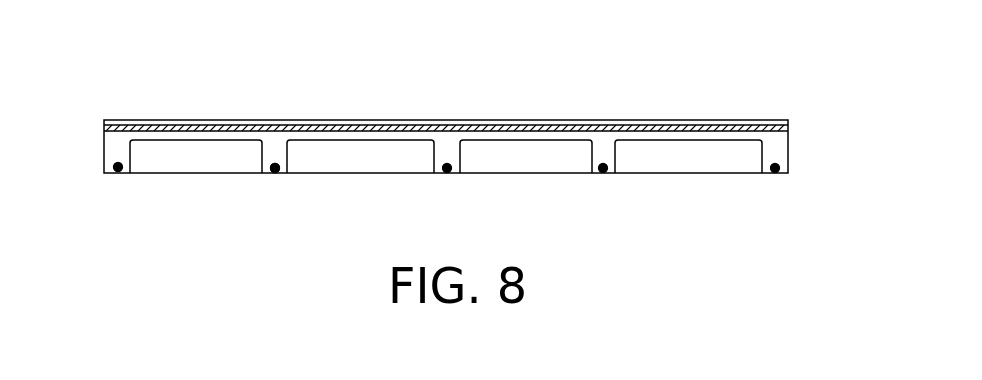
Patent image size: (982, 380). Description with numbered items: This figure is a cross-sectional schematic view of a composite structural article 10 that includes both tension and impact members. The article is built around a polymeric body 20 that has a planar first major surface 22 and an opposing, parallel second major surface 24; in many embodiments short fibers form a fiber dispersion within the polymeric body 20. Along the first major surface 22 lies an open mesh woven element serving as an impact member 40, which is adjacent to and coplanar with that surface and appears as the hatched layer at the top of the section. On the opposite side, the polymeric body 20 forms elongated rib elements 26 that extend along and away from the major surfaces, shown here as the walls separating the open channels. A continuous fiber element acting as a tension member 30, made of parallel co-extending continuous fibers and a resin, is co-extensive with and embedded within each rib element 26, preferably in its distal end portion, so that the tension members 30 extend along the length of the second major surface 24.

The composite structural article 10 is at (435, 131).
The polymeric body 20 is at (422, 149).
The first major surface 22 is at (275, 119).
The impact member 40 is at (152, 121).
The second major surface 24 is at (214, 141).
The rib element 26 is at (115, 175).
The tension member 30 is at (280, 167).